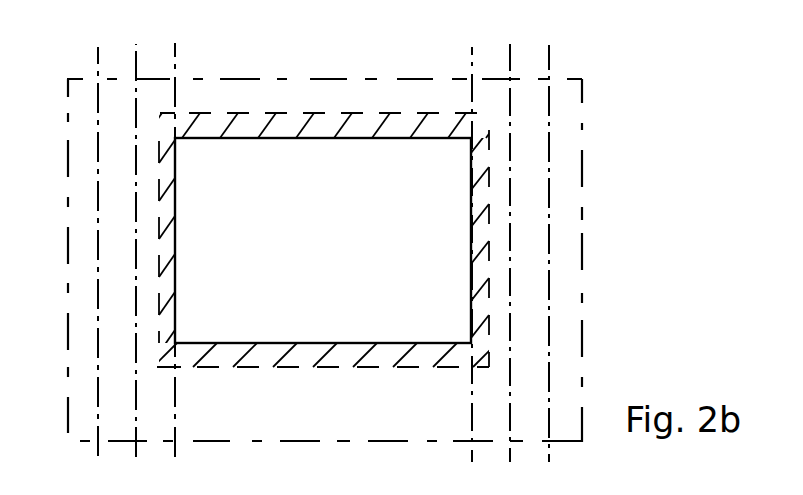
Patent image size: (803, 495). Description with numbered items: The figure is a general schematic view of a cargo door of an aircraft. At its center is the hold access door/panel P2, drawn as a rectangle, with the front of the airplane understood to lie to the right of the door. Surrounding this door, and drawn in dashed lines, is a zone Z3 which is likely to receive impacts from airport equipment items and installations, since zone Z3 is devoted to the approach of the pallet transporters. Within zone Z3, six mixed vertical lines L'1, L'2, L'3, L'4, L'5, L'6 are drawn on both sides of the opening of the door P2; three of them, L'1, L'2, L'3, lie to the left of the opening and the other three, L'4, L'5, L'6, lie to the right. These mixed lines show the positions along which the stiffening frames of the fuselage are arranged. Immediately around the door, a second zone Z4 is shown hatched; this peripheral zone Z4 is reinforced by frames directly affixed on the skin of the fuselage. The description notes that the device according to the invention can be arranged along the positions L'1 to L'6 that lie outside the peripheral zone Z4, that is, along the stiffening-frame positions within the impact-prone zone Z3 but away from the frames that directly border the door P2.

The mixed vertical line L'1 is at (72, 242).
The mixed vertical line L'2 is at (116, 233).
The mixed vertical line L'3 is at (202, 241).
The mixed vertical line L'4 is at (445, 242).
The mixed vertical line L'5 is at (490, 234).
The mixed vertical line L'6 is at (577, 242).
The zone Z3 is at (585, 248).
The second zone Z4 is at (338, 126).
The hold access door/panel P2 is at (302, 327).